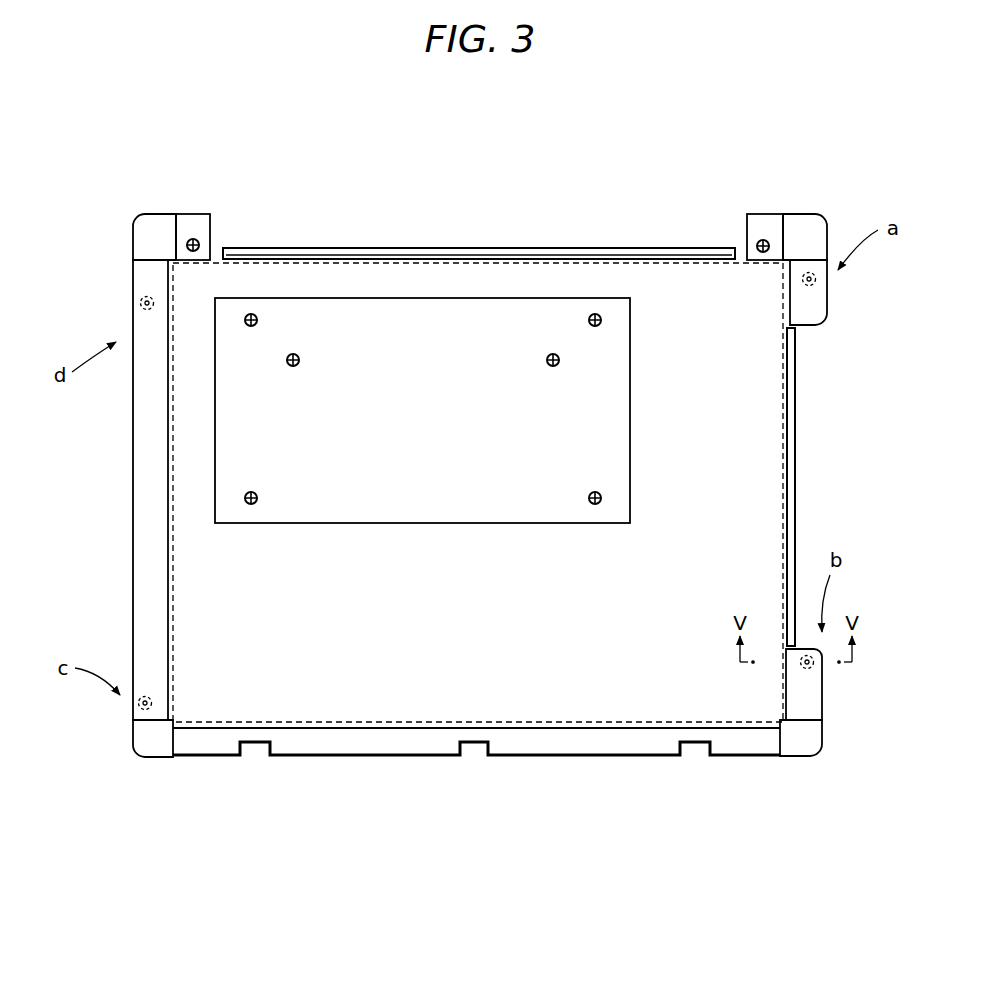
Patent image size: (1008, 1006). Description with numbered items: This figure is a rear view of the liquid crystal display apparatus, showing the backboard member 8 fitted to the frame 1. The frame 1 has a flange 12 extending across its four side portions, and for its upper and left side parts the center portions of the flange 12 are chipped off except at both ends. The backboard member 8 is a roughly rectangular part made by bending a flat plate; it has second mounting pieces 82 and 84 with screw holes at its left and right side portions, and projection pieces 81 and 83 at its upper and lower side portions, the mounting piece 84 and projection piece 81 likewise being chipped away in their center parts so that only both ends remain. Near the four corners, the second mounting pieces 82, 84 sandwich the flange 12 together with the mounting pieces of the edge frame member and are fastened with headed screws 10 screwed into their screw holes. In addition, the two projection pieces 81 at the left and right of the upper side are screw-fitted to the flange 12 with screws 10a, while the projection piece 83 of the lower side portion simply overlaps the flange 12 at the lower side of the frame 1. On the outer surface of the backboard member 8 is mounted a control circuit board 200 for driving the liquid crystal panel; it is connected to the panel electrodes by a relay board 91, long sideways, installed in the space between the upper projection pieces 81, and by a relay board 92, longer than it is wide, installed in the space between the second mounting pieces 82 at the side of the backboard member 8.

The frame 1 is at (474, 497).
The backboard member 8 is at (414, 738).
The screws 10 is at (142, 307).
The screws 10a is at (203, 235).
The flange 12 is at (150, 224).
The projection piece 81 is at (190, 220).
The second mounting piece 82 is at (815, 305).
The projection piece 83 is at (627, 742).
The second mounting piece 84 is at (150, 520).
The relay board 91 is at (595, 246).
The relay board 92 is at (797, 427).
The control circuit board 200 is at (413, 524).